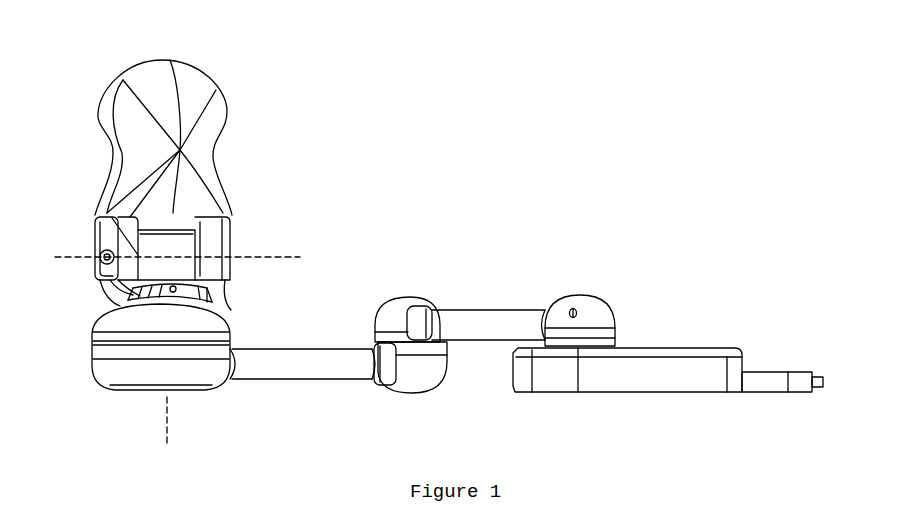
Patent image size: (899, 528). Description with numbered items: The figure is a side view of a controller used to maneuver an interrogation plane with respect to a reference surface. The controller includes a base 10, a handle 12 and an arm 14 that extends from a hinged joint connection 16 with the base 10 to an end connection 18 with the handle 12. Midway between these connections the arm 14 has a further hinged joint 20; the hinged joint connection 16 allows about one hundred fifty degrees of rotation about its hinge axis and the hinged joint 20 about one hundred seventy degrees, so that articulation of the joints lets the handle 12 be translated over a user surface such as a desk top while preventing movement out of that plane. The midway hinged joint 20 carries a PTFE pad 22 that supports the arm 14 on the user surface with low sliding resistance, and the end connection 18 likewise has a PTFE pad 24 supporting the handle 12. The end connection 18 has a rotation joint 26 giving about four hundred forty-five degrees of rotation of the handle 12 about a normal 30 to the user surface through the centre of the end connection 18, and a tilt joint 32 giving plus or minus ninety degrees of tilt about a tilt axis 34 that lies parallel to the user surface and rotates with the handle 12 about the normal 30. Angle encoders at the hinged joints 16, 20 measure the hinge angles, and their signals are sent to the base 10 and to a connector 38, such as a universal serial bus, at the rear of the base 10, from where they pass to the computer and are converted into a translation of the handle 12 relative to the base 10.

The base 10 is at (667, 363).
The handle 12 is at (198, 88).
The arm 14 is at (483, 318).
The hinged joint connection 16 is at (597, 296).
The end connection 18 is at (52, 228).
The hinged joint 20 is at (399, 318).
The PTFE pad 22 is at (410, 396).
The PTFE pad 24 is at (193, 393).
The rotation joint 26 is at (200, 340).
The normal 30 is at (167, 412).
The tilt joint 32 is at (110, 217).
The tilt axis 34 is at (267, 255).
The connector 38 is at (798, 370).